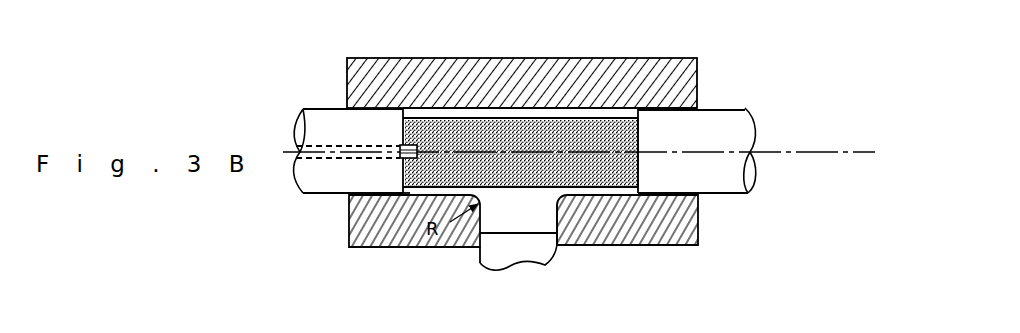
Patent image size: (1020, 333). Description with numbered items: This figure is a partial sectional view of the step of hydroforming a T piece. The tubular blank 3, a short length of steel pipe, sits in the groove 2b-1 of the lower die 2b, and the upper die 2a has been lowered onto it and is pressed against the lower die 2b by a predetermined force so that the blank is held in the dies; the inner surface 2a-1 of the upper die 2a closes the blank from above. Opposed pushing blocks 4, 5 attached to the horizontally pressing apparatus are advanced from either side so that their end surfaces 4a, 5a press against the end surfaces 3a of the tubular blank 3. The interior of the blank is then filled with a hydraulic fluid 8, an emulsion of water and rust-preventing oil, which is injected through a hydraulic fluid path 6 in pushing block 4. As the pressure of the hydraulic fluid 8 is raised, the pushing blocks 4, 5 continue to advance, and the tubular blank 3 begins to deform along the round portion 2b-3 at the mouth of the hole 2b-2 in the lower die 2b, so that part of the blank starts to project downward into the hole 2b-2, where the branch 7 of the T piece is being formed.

The upper die 2a is at (678, 80).
The inner surface of upper die half 2a-1 is at (622, 105).
The lower die 2b is at (357, 223).
The groove 2b-1 is at (610, 195).
The hole 2b-2 is at (493, 213).
The round (R) portion 2b-3 is at (568, 207).
The tubular blank 3 is at (430, 115).
The end surfaces 3a is at (403, 147).
The pushing block 4 is at (315, 128).
The end surface 4a is at (405, 187).
The pushing block 5 is at (728, 138).
The end surface 5a is at (617, 120).
The hydraulic fluid path 6 is at (401, 150).
The branch pipe 7 is at (538, 248).
The hydraulic fluid 8 is at (503, 133).